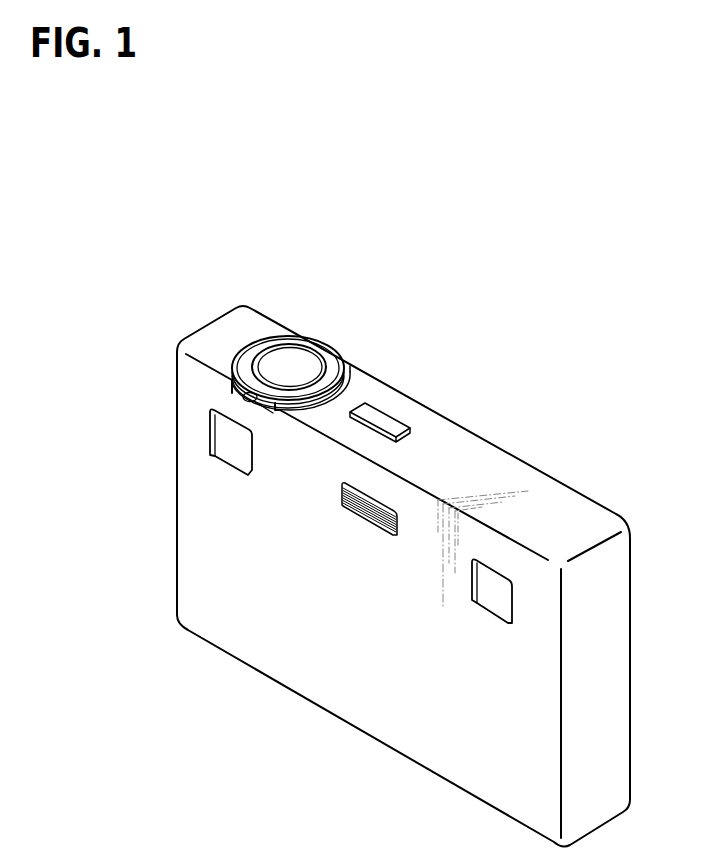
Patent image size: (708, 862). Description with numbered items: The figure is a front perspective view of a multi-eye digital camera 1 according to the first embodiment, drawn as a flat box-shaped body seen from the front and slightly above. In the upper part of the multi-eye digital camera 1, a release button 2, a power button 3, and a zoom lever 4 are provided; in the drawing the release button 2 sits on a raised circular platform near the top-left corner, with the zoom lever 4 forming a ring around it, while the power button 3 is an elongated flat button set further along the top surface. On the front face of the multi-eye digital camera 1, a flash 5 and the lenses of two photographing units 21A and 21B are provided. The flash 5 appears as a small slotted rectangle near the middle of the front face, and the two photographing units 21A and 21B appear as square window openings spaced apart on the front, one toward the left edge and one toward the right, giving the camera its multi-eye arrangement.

The multi-eye digital camera 1 is at (548, 500).
The release button 2 is at (285, 352).
The power button 3 is at (381, 417).
The zoom lever 4 is at (247, 360).
The flash 5 is at (343, 512).
The photographing unit 21A is at (487, 583).
The photographing unit 21B is at (223, 434).